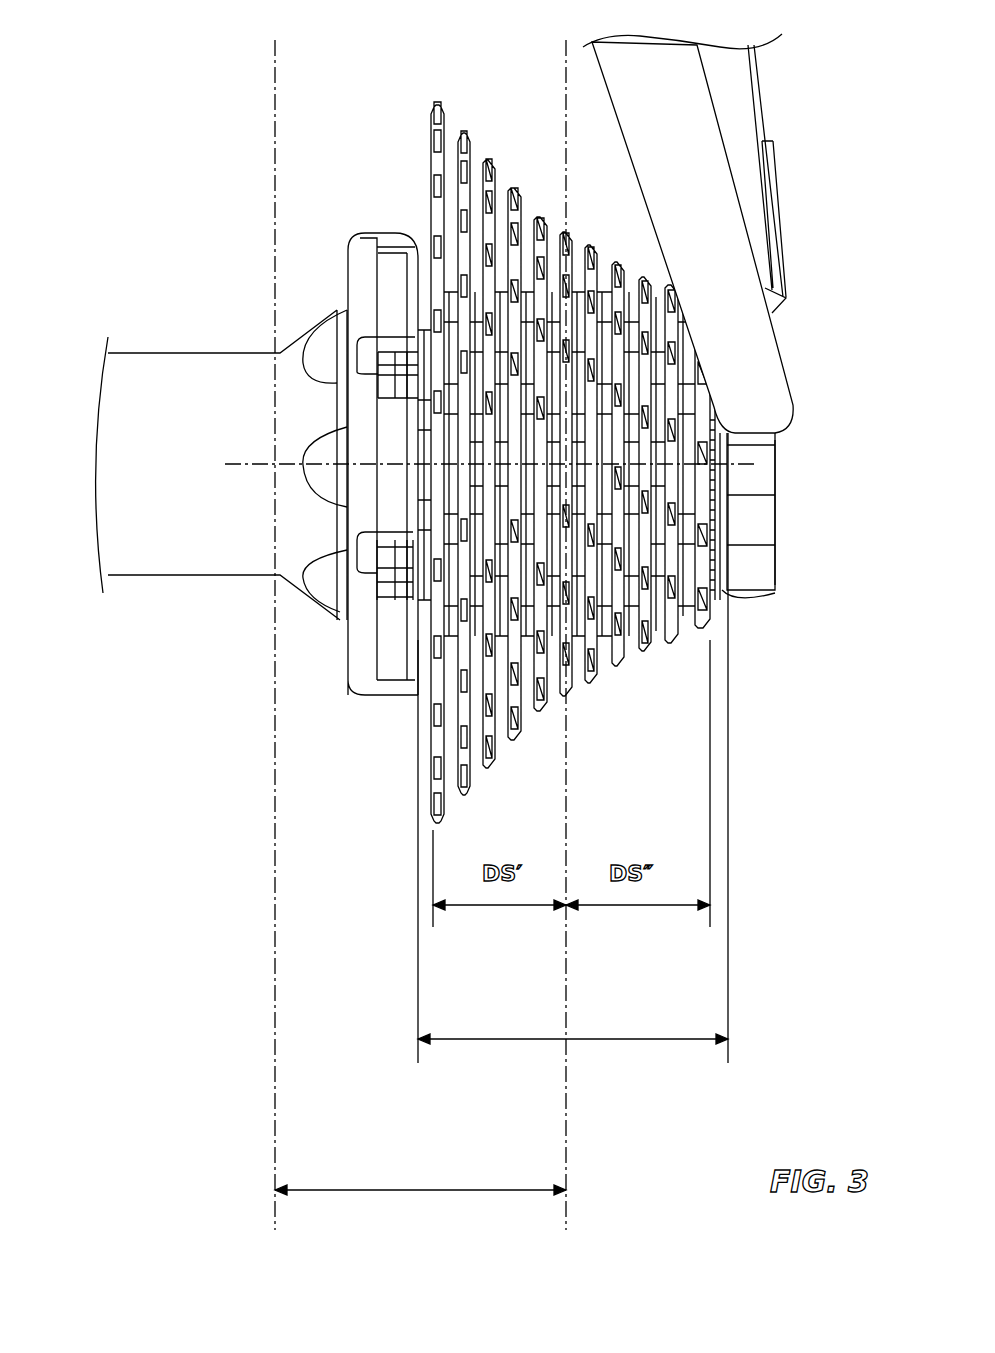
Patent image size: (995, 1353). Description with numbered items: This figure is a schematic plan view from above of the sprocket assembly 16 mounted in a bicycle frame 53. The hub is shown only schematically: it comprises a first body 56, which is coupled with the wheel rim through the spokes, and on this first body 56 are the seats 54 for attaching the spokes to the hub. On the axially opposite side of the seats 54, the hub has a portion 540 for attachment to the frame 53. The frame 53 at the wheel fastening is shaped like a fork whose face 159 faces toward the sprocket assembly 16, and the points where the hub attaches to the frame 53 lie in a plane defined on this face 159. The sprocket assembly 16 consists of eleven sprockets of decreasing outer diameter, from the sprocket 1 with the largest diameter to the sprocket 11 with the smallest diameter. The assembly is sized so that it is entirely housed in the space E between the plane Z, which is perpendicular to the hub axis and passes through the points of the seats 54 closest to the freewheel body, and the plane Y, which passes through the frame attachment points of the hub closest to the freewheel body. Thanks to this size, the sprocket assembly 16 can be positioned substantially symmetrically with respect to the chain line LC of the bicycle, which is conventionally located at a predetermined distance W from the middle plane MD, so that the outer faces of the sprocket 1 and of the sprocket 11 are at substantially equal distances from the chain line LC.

The sprocket assembly 16 is at (539, 464).
The seats 54 is at (386, 238).
The first body 56 is at (357, 645).
The sprocket 1 is at (443, 805).
The sprocket 11 is at (703, 618).
The frame 53 is at (762, 474).
The portion for attachment to the frame 540 is at (773, 513).
The face 159 is at (745, 600).
The plane Z is at (418, 775).
The plane Y is at (728, 862).
The space E is at (573, 1026).
The distance W is at (420, 1176).
The middle plane MD is at (275, 985).
The chain line LC is at (567, 1096).